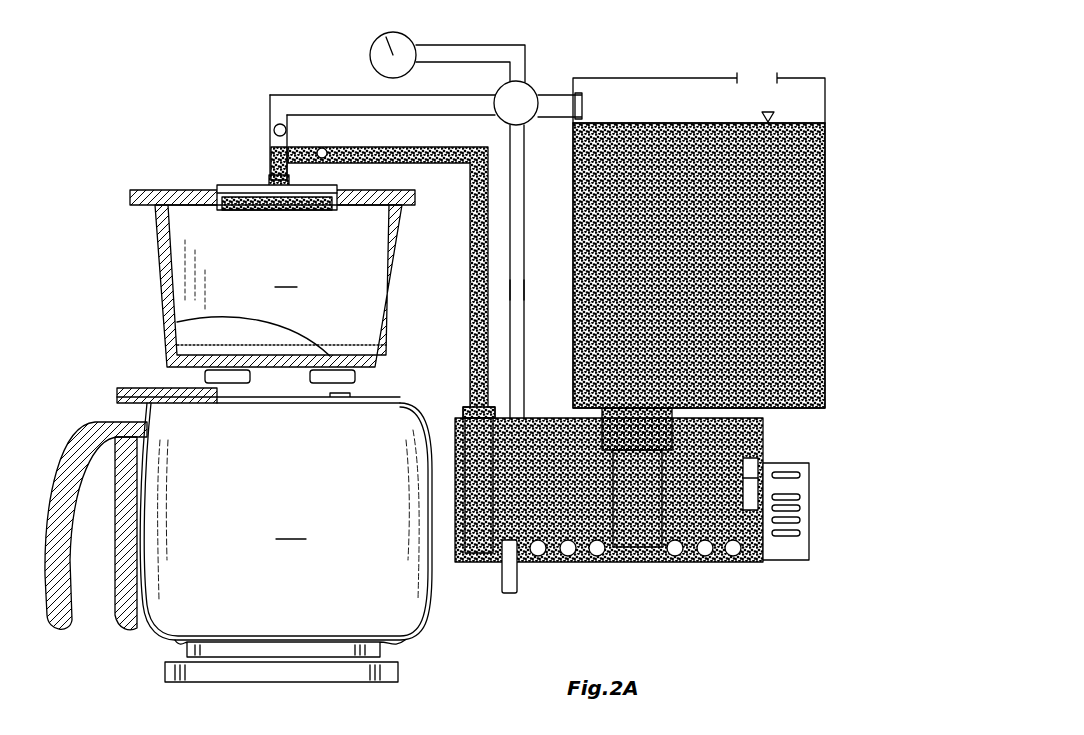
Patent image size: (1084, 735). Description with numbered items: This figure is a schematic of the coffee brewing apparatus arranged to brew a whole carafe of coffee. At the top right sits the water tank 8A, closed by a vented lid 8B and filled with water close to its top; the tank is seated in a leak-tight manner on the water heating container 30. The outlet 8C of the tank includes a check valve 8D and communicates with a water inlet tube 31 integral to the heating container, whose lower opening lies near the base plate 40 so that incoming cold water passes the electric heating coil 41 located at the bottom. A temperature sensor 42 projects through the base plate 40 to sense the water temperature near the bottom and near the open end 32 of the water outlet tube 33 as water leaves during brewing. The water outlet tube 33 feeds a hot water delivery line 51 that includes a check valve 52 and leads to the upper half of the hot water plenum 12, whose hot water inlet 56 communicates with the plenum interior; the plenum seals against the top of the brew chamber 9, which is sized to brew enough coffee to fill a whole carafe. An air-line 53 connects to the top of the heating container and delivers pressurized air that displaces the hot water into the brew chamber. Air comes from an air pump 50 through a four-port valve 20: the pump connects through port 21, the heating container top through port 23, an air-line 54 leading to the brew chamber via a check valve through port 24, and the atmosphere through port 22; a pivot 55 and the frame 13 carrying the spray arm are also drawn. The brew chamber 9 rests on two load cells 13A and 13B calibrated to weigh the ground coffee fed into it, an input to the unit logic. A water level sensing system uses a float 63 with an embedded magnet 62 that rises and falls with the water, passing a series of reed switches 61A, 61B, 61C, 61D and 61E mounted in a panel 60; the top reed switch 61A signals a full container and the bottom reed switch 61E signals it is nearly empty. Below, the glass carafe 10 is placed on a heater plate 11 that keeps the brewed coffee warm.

The water tank 8A is at (790, 213).
The vented lid 8B is at (800, 75).
The outlet of the tank 8C is at (640, 435).
The check valve 8D is at (745, 70).
The brew chamber 9 is at (286, 275).
The glass carafe 10 is at (238, 522).
The heater plate 11 is at (166, 673).
The hot water plenum 12 is at (205, 192).
The brew basket 13 is at (152, 212).
The load cell 13A is at (172, 320).
The load cell 13B is at (200, 375).
The four-port valve 20 is at (520, 100).
The port 21 is at (519, 80).
The port 22 is at (552, 112).
The port 23 is at (508, 133).
The port 24 is at (480, 102).
The water heating container 30 is at (537, 490).
The water inlet tube 31 is at (641, 522).
The open end of the water outlet tube 32 is at (486, 556).
The water outlet tube 33 is at (470, 408).
The base plate 40 is at (565, 563).
The electric heating coil 41 is at (731, 563).
The temperature sensor 42 is at (506, 580).
The air pump 50 is at (388, 33).
The hot water delivery line 51 is at (473, 256).
The check valve 52 is at (274, 152).
The air-line 53 is at (520, 293).
The air-line 54 is at (316, 104).
The pivot 55 is at (281, 124).
The hot water inlet 56 is at (257, 186).
The control panel 60 is at (788, 548).
The reed switch 61A is at (800, 475).
The reed switch 61B is at (802, 496).
The reed switch 61C is at (800, 508).
The reed switch 61D is at (800, 522).
The reed switch 61E is at (800, 536).
The embedded magnet 62 is at (766, 466).
The float 63 is at (758, 462).